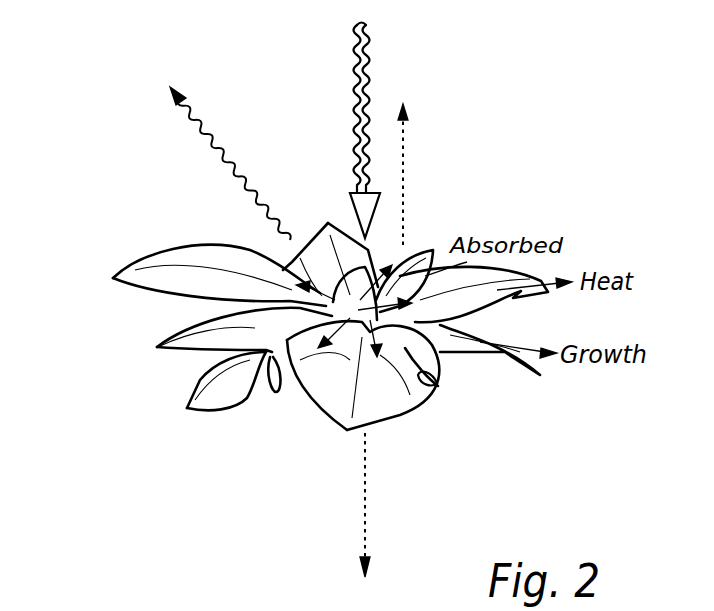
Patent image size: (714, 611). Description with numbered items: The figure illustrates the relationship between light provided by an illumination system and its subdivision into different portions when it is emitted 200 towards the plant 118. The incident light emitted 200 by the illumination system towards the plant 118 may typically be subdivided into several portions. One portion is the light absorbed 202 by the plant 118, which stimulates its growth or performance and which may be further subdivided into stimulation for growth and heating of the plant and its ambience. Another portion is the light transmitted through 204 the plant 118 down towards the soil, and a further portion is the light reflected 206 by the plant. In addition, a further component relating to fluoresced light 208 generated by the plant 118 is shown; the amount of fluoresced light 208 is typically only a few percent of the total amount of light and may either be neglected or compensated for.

The plant 118 is at (297, 390).
The emitted light 200 is at (350, 107).
The absorbed light 202 is at (438, 386).
The transmitted light 204 is at (362, 500).
The reflected light 206 is at (212, 142).
The fluoresced light 208 is at (403, 187).